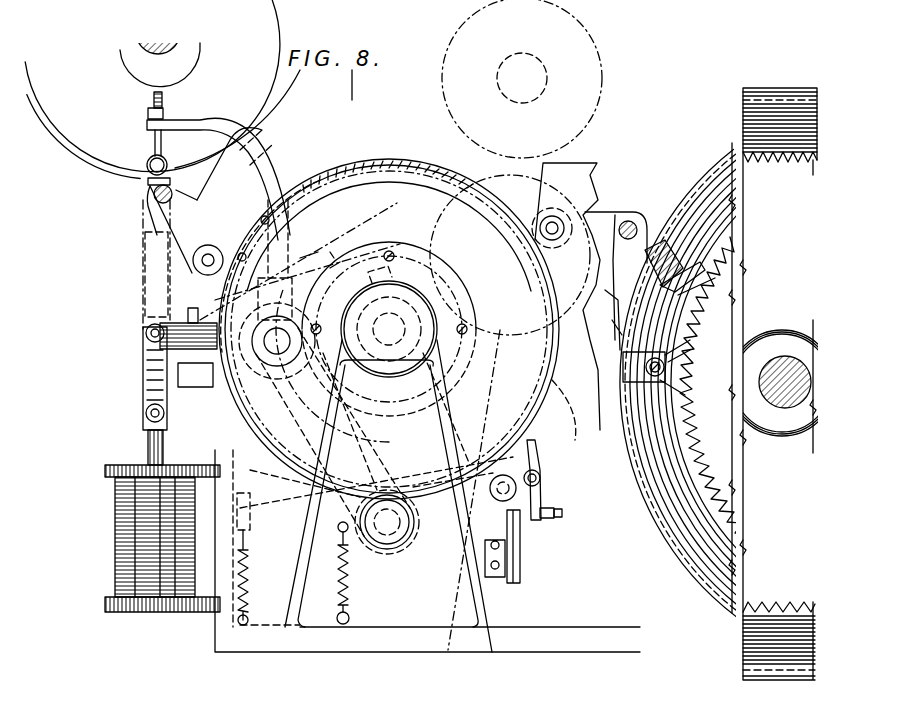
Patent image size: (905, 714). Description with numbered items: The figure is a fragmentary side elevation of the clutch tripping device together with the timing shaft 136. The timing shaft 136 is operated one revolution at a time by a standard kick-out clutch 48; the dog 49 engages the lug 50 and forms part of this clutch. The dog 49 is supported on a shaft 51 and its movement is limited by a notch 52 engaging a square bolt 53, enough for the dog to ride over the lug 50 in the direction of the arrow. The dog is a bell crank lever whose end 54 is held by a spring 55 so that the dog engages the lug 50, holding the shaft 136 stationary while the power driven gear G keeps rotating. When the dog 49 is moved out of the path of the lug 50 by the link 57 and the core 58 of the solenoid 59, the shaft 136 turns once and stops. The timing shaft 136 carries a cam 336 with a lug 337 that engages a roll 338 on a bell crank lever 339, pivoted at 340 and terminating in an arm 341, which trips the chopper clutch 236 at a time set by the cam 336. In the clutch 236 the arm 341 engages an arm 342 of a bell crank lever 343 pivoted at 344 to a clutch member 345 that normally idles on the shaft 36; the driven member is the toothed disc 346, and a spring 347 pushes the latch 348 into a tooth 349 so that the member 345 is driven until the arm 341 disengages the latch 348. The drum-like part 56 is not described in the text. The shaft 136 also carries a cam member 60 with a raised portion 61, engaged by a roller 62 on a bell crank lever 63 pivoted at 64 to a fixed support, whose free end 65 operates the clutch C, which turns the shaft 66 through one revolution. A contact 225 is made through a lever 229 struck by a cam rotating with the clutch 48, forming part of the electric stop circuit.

The clutch C is at (82, 148).
The shaft 66 is at (148, 56).
The free end 65 is at (260, 128).
The pivot 64 is at (148, 181).
The bell crank lever 63 is at (180, 212).
The roller 62 is at (225, 245).
The spring 55 is at (146, 246).
The raised portion 61 is at (213, 310).
The end 54 is at (170, 346).
The link 57 is at (160, 380).
The core 58 is at (150, 445).
The solenoid 59 is at (135, 513).
The square bolt 53 is at (274, 380).
The notch 52 is at (268, 442).
The shaft 51 is at (322, 412).
The cam member 60 is at (330, 176).
The power driven gear G is at (378, 162).
The kick-out clutch 48 is at (420, 165).
The dog 49 is at (336, 270).
The lug 50 is at (370, 258).
The timing shaft 136 is at (395, 322).
The lug 337 is at (540, 278).
The roll 338 is at (553, 216).
The bell crank lever 339 is at (614, 217).
The pivot 340 is at (645, 205).
The kick-out clutch 236 is at (728, 175).
The spring 347 is at (703, 262).
The latch 348 is at (700, 280).
The tooth 349 is at (706, 298).
The shaft 36 is at (803, 335).
The arm 341 is at (625, 350).
The arm 342 is at (633, 367).
The bell crank lever 343 is at (668, 357).
The pivot 344 is at (666, 382).
The cam 336 is at (560, 410).
The lever 229 is at (545, 485).
The clutch member 345 is at (556, 514).
The contact 225 is at (525, 535).
The drum 56 is at (646, 515).
The toothed disc 346 is at (668, 528).